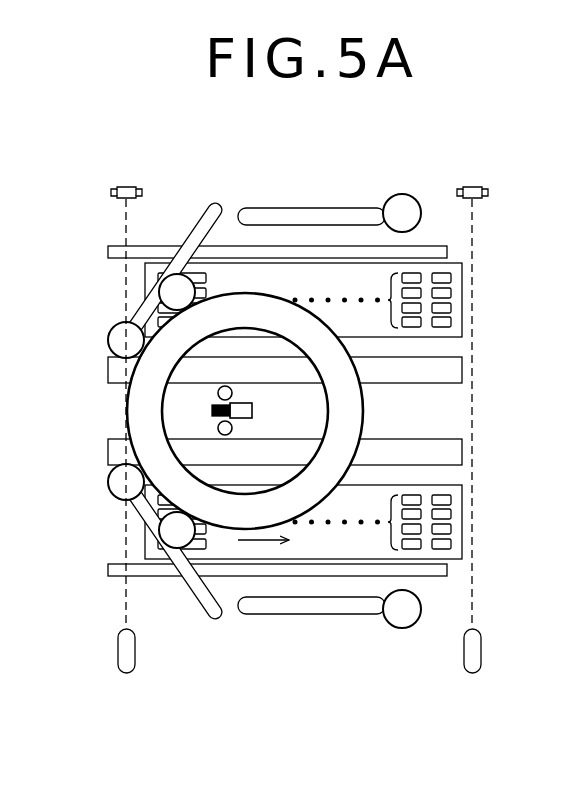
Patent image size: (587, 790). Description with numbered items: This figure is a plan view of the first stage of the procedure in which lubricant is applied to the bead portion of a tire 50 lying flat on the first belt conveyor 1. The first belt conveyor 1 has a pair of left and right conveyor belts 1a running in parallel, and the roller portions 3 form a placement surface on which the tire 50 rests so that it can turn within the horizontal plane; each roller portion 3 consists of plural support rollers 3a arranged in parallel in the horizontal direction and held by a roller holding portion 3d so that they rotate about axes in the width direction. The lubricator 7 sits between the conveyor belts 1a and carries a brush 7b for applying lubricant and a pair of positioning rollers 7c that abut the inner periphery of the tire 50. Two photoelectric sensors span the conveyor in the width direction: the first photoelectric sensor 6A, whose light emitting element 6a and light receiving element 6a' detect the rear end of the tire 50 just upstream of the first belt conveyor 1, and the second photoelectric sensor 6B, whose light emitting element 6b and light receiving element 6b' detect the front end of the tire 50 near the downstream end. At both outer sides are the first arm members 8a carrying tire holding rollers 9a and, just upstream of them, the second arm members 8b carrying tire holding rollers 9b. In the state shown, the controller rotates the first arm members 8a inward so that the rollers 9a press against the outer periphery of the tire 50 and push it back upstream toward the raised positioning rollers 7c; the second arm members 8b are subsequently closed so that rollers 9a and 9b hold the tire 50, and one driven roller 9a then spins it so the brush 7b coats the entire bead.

The first belt conveyor 1 is at (283, 411).
The conveyor belts 1a is at (453, 370).
The roller portion 3 is at (290, 412).
The support rollers 3a is at (410, 273).
The roller holding portion 3d is at (145, 275).
The tire 50 is at (368, 414).
The lubricator 7 is at (241, 409).
The brush 7b is at (245, 404).
The positioning rollers 7c is at (217, 396).
The first arm members 8a is at (193, 243).
The second arm members 8b is at (316, 214).
The tire holding rollers 9a is at (170, 288).
The tire holding rollers 9b is at (402, 205).
The light emitting element 6a is at (500, 651).
The light emitting element 6b is at (95, 651).
The light receiving element 6a' is at (470, 167).
The light receiving element 6b' is at (123, 160).
The first photoelectric sensor 6A is at (489, 202).
The second photoelectric sensor 6B is at (101, 199).